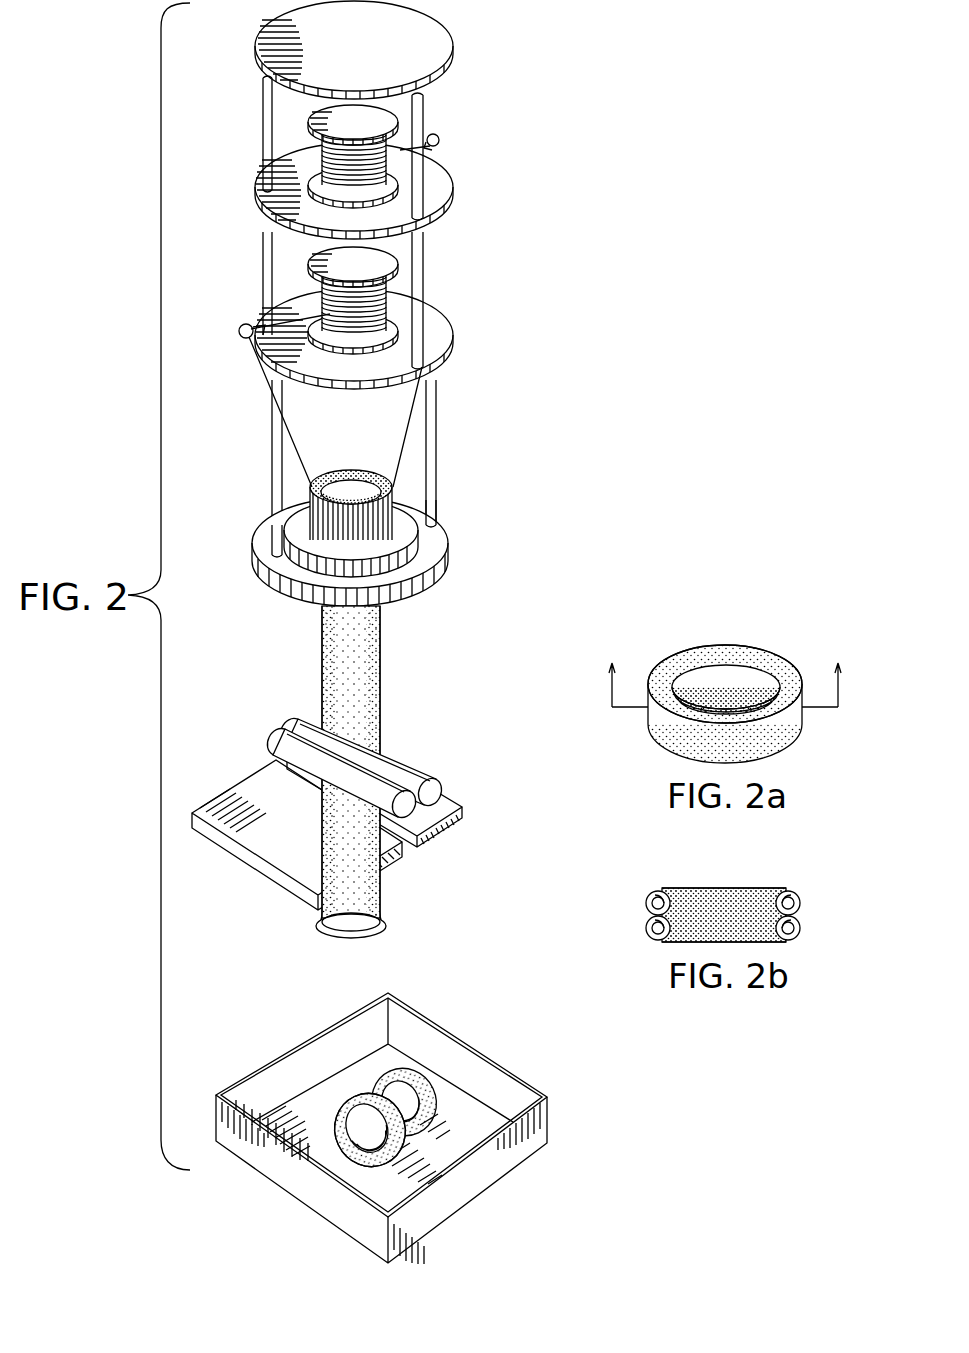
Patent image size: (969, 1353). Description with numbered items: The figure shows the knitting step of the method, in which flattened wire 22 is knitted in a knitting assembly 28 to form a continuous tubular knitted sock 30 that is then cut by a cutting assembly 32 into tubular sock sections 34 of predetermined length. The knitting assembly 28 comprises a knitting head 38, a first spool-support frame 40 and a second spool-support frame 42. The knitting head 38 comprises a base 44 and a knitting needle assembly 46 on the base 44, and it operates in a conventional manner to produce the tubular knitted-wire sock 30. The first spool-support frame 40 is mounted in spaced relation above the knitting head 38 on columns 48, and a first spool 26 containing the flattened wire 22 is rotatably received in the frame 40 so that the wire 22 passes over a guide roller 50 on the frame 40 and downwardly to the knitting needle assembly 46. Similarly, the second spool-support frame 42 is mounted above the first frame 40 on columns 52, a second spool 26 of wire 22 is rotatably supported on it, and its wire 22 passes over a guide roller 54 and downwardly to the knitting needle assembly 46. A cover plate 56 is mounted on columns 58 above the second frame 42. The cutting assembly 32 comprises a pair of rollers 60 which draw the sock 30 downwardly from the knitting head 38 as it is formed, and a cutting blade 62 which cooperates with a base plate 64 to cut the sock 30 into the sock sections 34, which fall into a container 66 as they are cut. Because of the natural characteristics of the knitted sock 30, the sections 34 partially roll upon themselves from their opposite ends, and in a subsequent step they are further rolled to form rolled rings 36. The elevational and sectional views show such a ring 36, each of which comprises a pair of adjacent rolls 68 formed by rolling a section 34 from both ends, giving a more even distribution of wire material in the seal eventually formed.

In FIG. 2, the flattened wire 22 is at (441, 157).
In FIG. 2, the spool 26 is at (376, 135).
In FIG. 2, the knitting assembly 28 is at (506, 273).
In FIG. 2, the tubular knitted sock 30 is at (382, 697).
In FIG. 2, the cutting assembly 32 is at (334, 768).
In FIG. 2, the tubular sock sections 34 is at (398, 1095).
In FIG. 2A, the rolled ring 36 is at (731, 699).
In FIG. 2B, the rolled ring 36 is at (714, 891).
In FIG. 2, the knitting head 38 is at (438, 538).
In FIG. 2, the first spool-support frame 40 is at (445, 333).
In FIG. 2, the second spool-support frame 42 is at (445, 186).
In FIG. 2, the base 44 is at (425, 568).
In FIG. 2, the knitting needle assembly 46 is at (400, 527).
In FIG. 2, the columns 48 is at (437, 455).
In FIG. 2, the guide roller 50 is at (239, 334).
In FIG. 2, the columns 52 is at (263, 258).
In FIG. 2, the guide roller 54 is at (439, 137).
In FIG. 2, the cover plate 56 is at (378, 54).
In FIG. 2, the columns 58 is at (263, 130).
In FIG. 2, the rollers 60 is at (400, 772).
In FIG. 2, the cutting blade 62 is at (265, 816).
In FIG. 2, the base plate 64 is at (462, 812).
In FIG. 2, the container 66 is at (296, 1066).
In FIG. 2A, the rolls 68 is at (770, 656).
In FIG. 2B, the rolls 68 is at (646, 927).